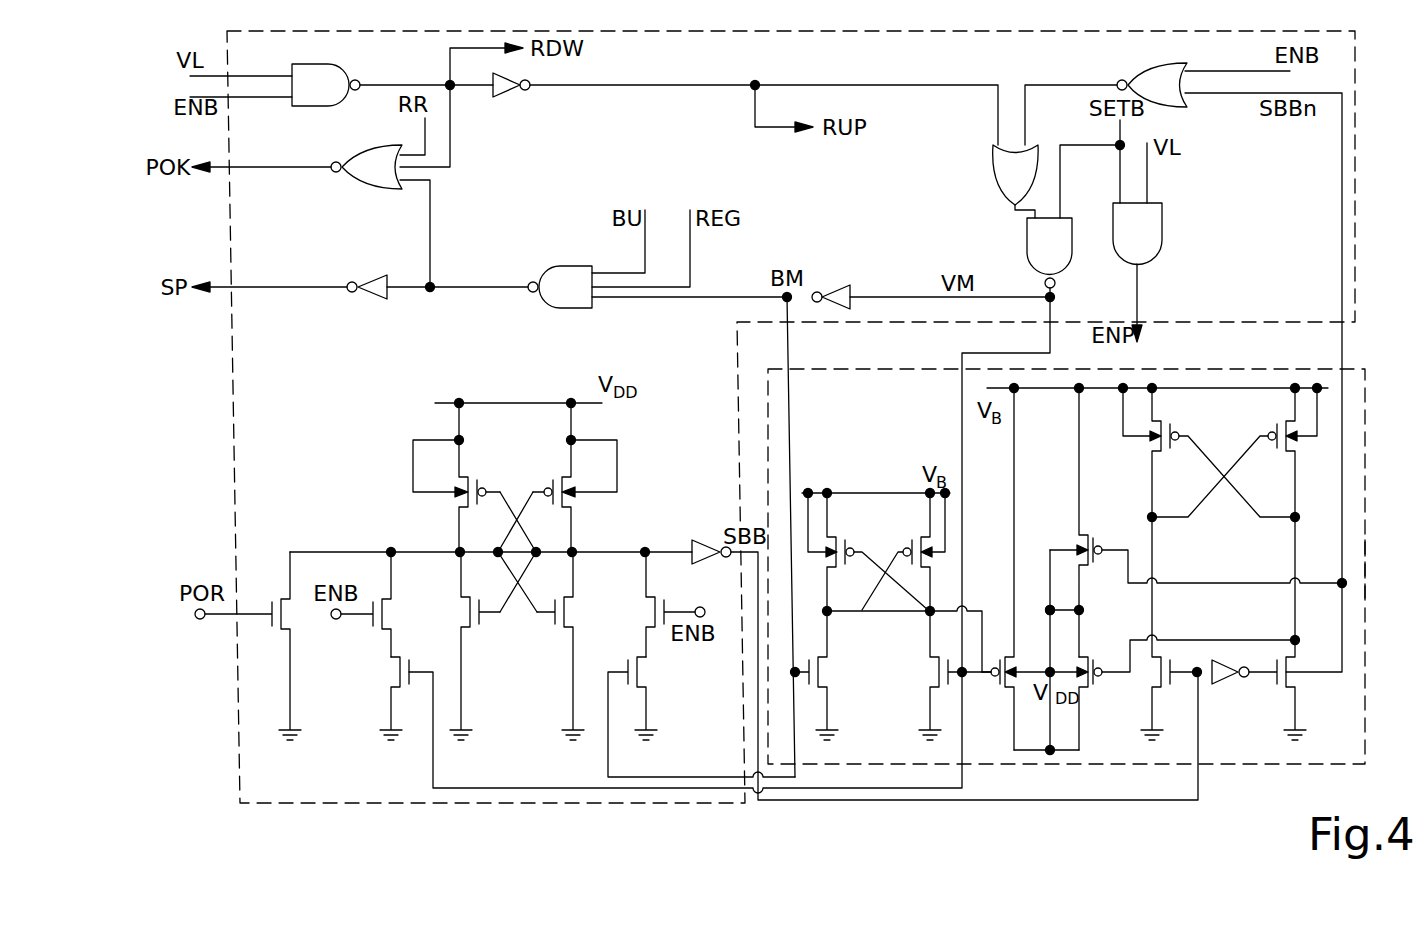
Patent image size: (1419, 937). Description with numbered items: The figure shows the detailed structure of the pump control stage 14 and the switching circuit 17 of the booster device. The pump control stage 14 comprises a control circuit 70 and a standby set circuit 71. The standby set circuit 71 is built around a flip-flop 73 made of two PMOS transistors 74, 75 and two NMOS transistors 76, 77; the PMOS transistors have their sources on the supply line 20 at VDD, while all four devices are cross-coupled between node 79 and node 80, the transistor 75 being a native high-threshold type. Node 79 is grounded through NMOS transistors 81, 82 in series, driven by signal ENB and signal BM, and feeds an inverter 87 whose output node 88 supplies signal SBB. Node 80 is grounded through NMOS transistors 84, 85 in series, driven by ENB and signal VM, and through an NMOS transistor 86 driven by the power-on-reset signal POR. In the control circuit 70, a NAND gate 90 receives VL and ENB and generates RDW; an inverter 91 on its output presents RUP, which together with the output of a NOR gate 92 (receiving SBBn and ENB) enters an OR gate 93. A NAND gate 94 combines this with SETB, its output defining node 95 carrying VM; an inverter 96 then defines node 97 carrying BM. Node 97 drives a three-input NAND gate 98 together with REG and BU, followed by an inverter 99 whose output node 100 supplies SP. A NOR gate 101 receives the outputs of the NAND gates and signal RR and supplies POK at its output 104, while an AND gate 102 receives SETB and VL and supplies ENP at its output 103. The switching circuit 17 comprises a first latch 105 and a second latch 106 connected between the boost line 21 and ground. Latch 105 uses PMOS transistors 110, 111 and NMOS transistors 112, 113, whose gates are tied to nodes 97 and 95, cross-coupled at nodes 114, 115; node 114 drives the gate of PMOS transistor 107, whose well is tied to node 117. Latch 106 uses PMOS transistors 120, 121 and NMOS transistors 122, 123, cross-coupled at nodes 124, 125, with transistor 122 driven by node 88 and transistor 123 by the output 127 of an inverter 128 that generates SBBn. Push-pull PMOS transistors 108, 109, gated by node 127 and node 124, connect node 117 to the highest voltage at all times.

The pump control stage 14 is at (1357, 215).
The switching circuit 17 is at (1367, 548).
The supply line 20 is at (474, 400).
The boost line 21 is at (875, 492).
The control circuit 70 is at (1212, 228).
The standby set circuit 71 is at (648, 432).
The flip-flop 73 is at (605, 525).
The PMOS transistor 74 is at (458, 500).
The PMOS transistor 75 is at (612, 494).
The NMOS transistor 76 is at (462, 616).
The NMOS transistor 77 is at (582, 606).
The node 79 is at (645, 551).
The node 80 is at (391, 550).
The NMOS transistor 81 is at (648, 612).
The NMOS transistor 82 is at (646, 675).
The NMOS transistor 84 is at (398, 622).
The NMOS transistor 85 is at (405, 678).
The NMOS transistor 86 is at (296, 622).
The inverter 87 is at (703, 540).
The node 88 is at (756, 628).
The NAND gate 90 is at (340, 75).
The inverter 91 is at (520, 95).
The NOR gate 92 is at (1172, 100).
The OR gate 93 is at (1000, 167).
The NAND gate 94 is at (1040, 250).
The node 95 is at (1060, 297).
The inverter 96 is at (840, 280).
The node 97 is at (783, 299).
The three-input NAND gate 98 is at (560, 252).
The inverter 99 is at (372, 292).
The node 100 is at (272, 290).
The NOR gate 101 is at (378, 158).
The AND gate 102 is at (1150, 222).
The output 103 is at (1140, 305).
The output 104 is at (265, 172).
The first latch 105 is at (903, 468).
The second latch 106 is at (1272, 715).
The PMOS transistor 107 is at (1014, 692).
The PMOS transistor 108 is at (1082, 548).
The PMOS transistor 109 is at (1077, 655).
The PMOS transistor 110 is at (833, 560).
The PMOS transistor 111 is at (930, 560).
The NMOS transistor 112 is at (832, 675).
The NMOS transistor 113 is at (938, 675).
The node 114 is at (928, 614).
The node 115 is at (832, 614).
The node 117 is at (1050, 609).
The PMOS transistor 120 is at (1153, 443).
The PMOS transistor 121 is at (1300, 447).
The NMOS transistor 122 is at (1160, 674).
The NMOS transistor 123 is at (1300, 680).
The node 124 is at (1292, 516).
The node 125 is at (1156, 516).
The output 127 is at (1344, 680).
The inverter 128 is at (1223, 685).